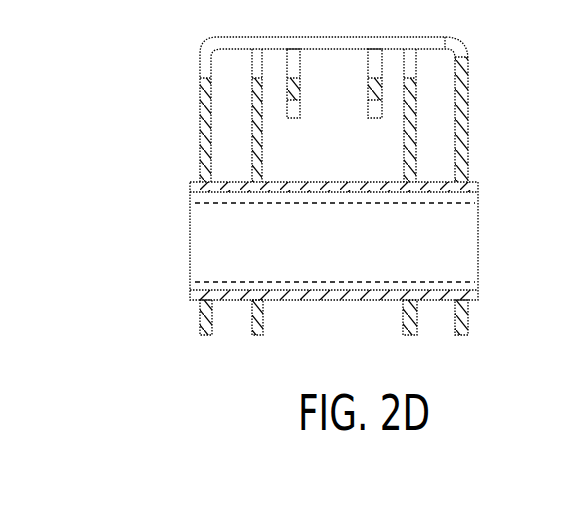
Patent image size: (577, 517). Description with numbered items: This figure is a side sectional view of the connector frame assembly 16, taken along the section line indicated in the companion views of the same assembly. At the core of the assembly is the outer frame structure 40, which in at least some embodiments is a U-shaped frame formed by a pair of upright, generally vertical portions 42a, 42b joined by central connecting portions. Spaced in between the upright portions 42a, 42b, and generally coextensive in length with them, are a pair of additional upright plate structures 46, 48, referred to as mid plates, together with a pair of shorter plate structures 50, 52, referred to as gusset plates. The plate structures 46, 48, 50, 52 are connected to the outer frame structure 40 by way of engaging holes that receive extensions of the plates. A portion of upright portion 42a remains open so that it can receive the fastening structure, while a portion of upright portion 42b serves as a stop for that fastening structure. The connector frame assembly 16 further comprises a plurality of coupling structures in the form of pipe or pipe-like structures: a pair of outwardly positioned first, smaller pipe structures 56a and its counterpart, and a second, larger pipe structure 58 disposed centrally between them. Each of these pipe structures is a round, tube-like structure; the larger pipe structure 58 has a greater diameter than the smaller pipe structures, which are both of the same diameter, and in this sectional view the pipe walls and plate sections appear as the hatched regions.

The connector frame assembly 16 is at (172, 294).
The outer frame structure 40 is at (470, 319).
The upright portion 42a is at (206, 335).
The upright portion 42b is at (461, 335).
The upright plate structure (mid plate) 46 is at (257, 335).
The upright plate structure (mid plate) 48 is at (410, 335).
The shorter plate structure (gusset plate) 50 is at (298, 98).
The shorter plate structure (gusset plate) 52 is at (368, 98).
The first, smaller pipe structure 56a is at (192, 220).
The second, larger pipe structure 58 is at (190, 183).